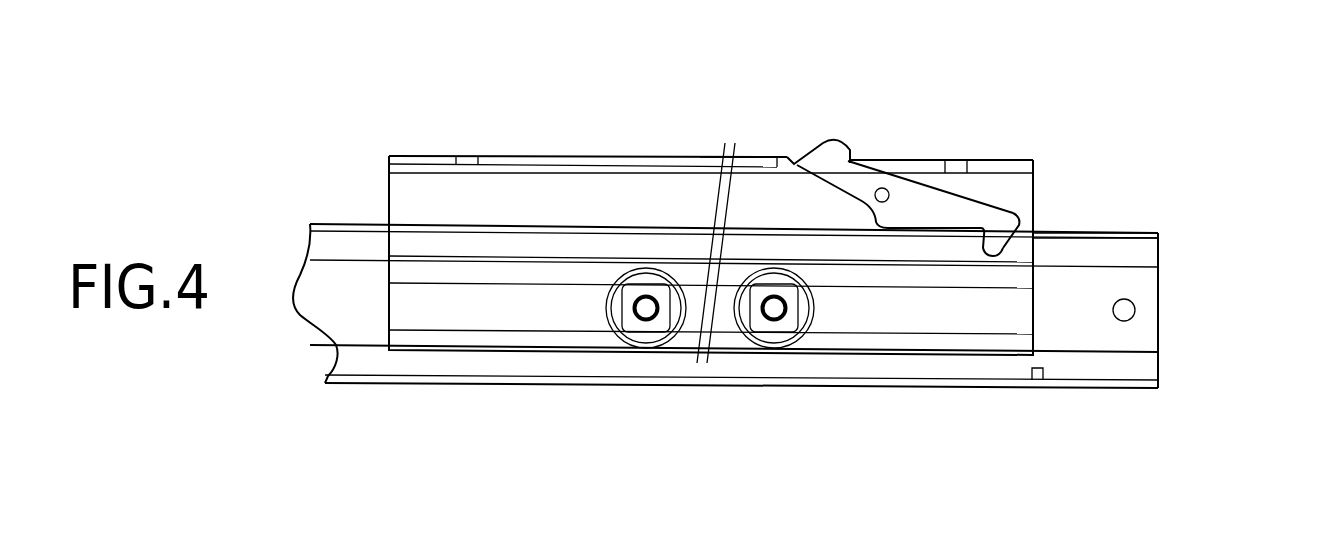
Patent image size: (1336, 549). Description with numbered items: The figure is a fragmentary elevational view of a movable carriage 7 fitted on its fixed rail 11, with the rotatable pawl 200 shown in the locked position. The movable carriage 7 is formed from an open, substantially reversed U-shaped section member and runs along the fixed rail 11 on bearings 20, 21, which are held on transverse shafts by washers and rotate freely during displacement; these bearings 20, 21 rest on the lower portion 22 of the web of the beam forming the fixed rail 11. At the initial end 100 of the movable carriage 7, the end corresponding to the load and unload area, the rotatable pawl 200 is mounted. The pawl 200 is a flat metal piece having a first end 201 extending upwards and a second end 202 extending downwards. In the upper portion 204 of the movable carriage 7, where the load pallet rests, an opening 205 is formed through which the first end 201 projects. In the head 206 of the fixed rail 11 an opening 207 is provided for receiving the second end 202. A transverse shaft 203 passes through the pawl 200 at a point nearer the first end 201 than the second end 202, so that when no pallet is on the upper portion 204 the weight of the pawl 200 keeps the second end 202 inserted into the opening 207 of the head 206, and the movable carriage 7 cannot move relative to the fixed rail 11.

The movable carriage 7 is at (1040, 157).
The fixed rail 11 is at (1164, 280).
The bearing 20 is at (648, 328).
The bearing 21 is at (768, 337).
The lower portion of the web of the beam 22 is at (848, 348).
The initial end 100 is at (1158, 323).
The rotatable pawl 200 is at (945, 203).
The first end 201 is at (826, 141).
The second end 202 is at (993, 252).
The transverse shaft 203 is at (882, 187).
The upper portion 204 is at (574, 156).
The opening 205 is at (778, 158).
The head 206 is at (1143, 232).
The opening 207 is at (1023, 230).